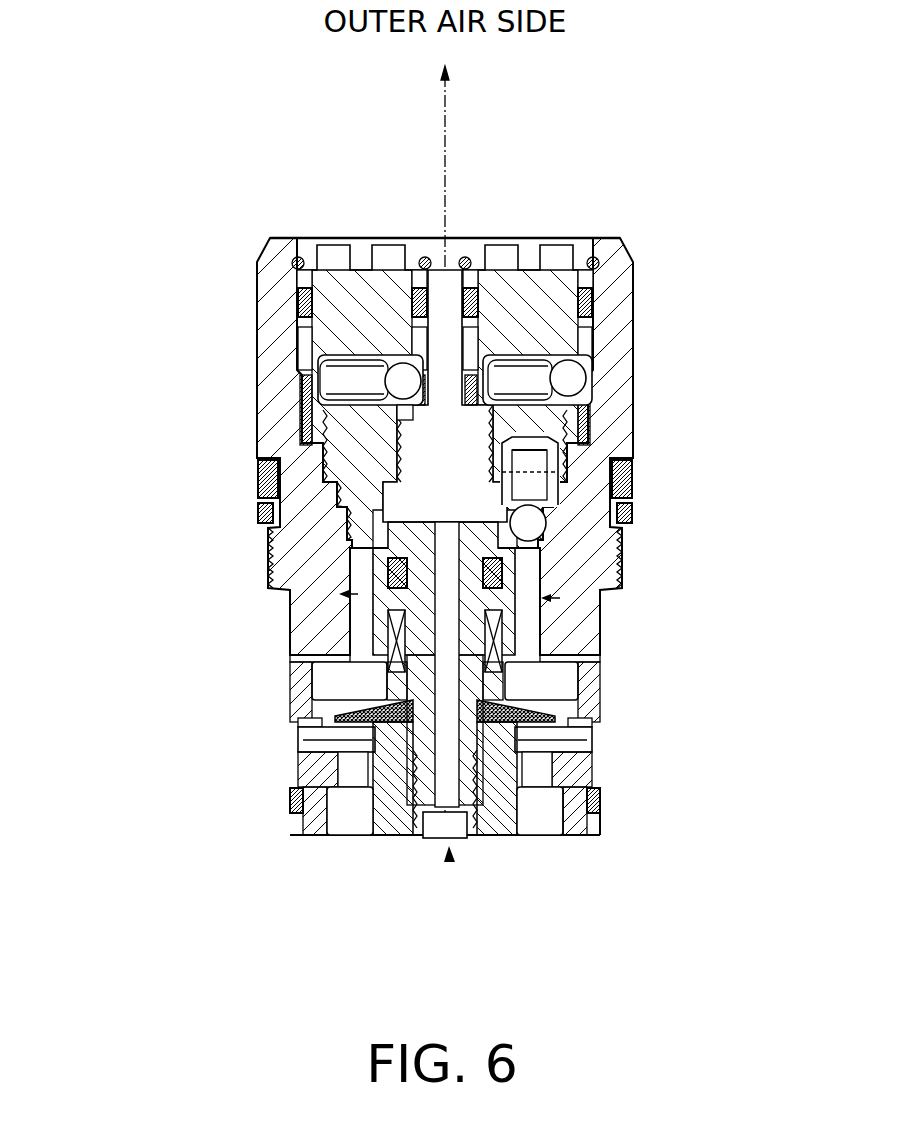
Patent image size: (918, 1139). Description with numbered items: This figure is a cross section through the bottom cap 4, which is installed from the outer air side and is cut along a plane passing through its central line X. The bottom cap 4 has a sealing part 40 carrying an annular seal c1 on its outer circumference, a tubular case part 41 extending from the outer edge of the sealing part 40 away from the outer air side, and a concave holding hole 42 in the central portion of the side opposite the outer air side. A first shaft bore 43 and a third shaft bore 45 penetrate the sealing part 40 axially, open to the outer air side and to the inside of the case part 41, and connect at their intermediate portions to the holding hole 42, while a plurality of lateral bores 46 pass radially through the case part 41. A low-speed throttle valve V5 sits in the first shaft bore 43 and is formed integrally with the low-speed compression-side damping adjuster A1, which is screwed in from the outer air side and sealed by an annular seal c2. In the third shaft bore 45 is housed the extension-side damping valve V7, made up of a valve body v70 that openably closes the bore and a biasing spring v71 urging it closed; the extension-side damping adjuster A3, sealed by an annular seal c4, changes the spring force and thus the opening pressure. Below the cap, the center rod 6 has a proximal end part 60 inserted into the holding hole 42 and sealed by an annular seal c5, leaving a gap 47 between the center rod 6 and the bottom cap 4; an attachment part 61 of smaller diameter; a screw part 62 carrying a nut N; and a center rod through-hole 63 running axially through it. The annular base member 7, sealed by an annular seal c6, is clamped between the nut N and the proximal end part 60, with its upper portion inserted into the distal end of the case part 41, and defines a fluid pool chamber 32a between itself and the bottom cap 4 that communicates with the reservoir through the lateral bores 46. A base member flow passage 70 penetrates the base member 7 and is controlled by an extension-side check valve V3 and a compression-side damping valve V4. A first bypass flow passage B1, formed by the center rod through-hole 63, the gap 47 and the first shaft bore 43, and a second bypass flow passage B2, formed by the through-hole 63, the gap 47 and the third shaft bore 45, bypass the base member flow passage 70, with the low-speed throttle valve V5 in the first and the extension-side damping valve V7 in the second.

The bottom cap 4 is at (248, 240).
The center rod 6 is at (450, 860).
The base member 7 is at (286, 842).
The sealing part 40 is at (293, 437).
The tubular case part 41 is at (300, 720).
The concave holding hole 42 is at (372, 614).
The first shaft bore 43 is at (297, 350).
The third shaft bore 45 is at (590, 352).
The lateral bores 46 is at (330, 705).
The gap 47 is at (630, 473).
The proximal end part 60 is at (582, 645).
The attachment part 61 is at (365, 777).
The screw part 62 is at (506, 815).
The center rod through-hole 63 is at (440, 838).
The base member flow passage 70 is at (298, 785).
The fluid pool chamber 32a is at (330, 655).
The low-speed compression-side damping adjuster A1 is at (318, 238).
The extension-side damping adjuster A3 is at (560, 238).
The first bypass flow passage B1 is at (336, 597).
The second bypass flow passage B2 is at (563, 600).
The nut N is at (523, 820).
The central line X is at (450, 233).
The annular seal c1 is at (258, 478).
The annular seal c2 is at (297, 303).
The annular seal c4 is at (594, 303).
The annular seal c5 is at (610, 588).
The annular seal c6 is at (613, 810).
The extension-side check valve V3 is at (360, 740).
The compression-side damping valve V4 is at (588, 705).
The low-speed throttle valve V5 is at (385, 540).
The extension-side damping valve V7 is at (612, 540).
The valve body v70 is at (560, 495).
The biasing spring v71 is at (548, 437).